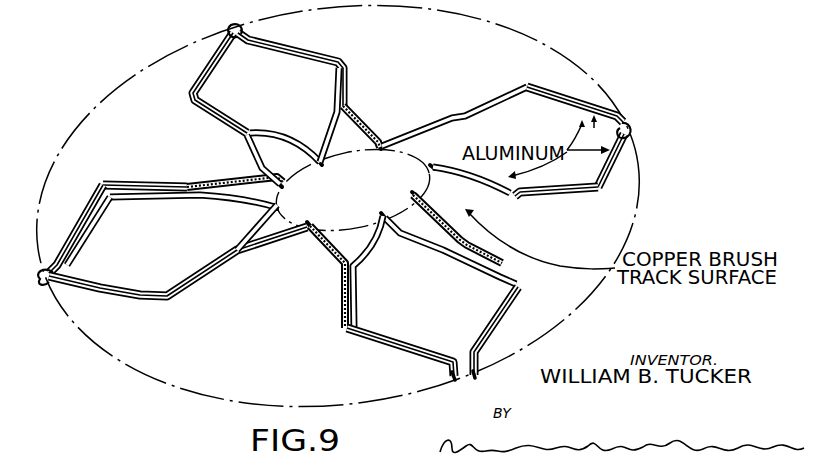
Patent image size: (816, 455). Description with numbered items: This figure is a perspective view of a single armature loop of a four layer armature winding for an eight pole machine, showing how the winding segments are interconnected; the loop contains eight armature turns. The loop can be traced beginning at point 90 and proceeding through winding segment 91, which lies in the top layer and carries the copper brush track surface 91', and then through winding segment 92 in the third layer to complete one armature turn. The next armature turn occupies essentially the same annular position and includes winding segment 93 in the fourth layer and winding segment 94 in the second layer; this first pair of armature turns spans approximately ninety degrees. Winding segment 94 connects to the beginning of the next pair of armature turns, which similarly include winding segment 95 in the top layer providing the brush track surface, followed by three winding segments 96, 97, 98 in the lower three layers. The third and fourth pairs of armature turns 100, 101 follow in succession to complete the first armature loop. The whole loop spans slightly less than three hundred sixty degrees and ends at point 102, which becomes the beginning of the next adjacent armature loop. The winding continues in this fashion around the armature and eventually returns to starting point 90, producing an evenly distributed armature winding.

The starting point 90 is at (420, 190).
The winding segment 91 is at (630, 155).
The copper brush track surface 91' is at (471, 182).
The winding segment 92 is at (557, 110).
The winding segment 93 is at (545, 198).
The winding segment 94 is at (546, 90).
The winding segment 95 is at (307, 41).
The winding segment 96 is at (224, 125).
The winding segment 97 is at (337, 83).
The winding segment 98 is at (233, 122).
The third pair of armature turns 100 is at (67, 290).
The fourth pair of armature turns 101 is at (409, 367).
The end point 102 is at (412, 195).